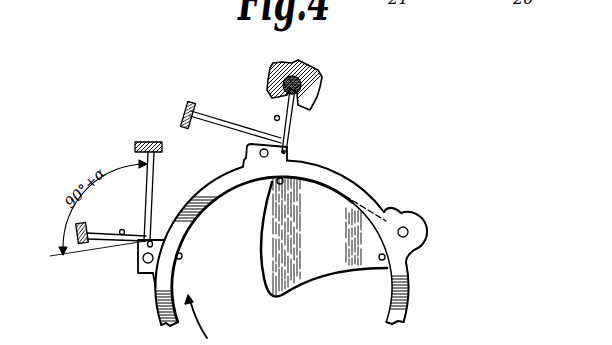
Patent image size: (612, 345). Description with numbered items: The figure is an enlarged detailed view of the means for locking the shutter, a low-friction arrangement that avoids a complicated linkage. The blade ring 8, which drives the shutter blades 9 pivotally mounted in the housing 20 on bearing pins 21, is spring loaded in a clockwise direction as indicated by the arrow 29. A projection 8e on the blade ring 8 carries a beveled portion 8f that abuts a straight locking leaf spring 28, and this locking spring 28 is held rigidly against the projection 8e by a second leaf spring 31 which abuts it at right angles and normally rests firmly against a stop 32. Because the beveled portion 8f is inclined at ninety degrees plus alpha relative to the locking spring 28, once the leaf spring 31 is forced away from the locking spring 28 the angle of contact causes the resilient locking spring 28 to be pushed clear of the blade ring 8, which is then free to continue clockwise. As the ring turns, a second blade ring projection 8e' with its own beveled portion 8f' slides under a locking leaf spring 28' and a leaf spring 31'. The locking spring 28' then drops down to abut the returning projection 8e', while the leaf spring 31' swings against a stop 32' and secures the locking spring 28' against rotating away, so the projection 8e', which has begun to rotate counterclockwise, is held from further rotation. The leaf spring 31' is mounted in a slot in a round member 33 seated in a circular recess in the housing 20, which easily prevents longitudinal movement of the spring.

The blade ring 8 is at (211, 193).
The projection 8e is at (141, 282).
The beveled portion 8f is at (159, 224).
The blade ring projection 8e' is at (324, 141).
The beveled portion 8f' is at (242, 153).
The shutter blades 9 is at (262, 253).
The housing 20 is at (322, 79).
The bearing pins 21 is at (277, 184).
The locking leaf spring 28 is at (157, 191).
The locking leaf spring 28' is at (230, 119).
The arrow 29 is at (203, 324).
The leaf spring 31 is at (98, 251).
The leaf spring 31' is at (305, 121).
The stop 32 is at (121, 217).
The stop 32' is at (261, 117).
The round member 33 is at (268, 77).